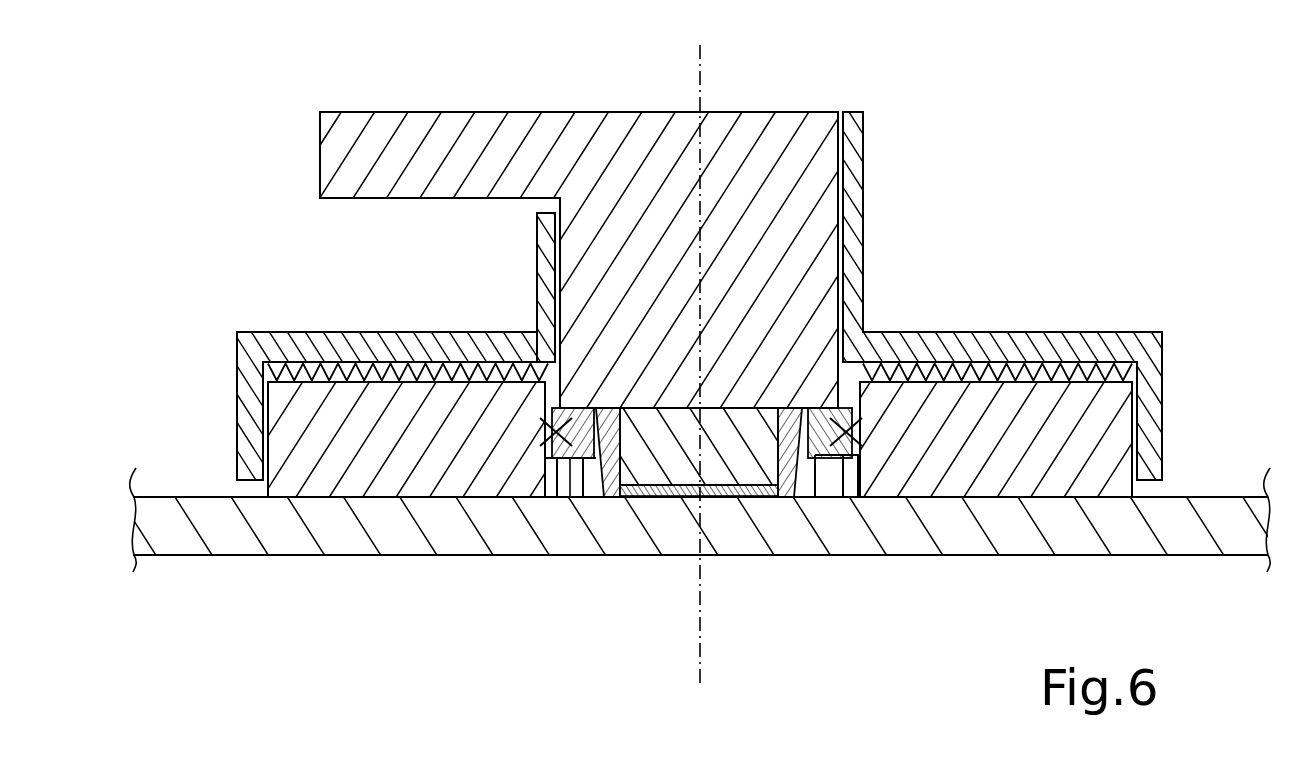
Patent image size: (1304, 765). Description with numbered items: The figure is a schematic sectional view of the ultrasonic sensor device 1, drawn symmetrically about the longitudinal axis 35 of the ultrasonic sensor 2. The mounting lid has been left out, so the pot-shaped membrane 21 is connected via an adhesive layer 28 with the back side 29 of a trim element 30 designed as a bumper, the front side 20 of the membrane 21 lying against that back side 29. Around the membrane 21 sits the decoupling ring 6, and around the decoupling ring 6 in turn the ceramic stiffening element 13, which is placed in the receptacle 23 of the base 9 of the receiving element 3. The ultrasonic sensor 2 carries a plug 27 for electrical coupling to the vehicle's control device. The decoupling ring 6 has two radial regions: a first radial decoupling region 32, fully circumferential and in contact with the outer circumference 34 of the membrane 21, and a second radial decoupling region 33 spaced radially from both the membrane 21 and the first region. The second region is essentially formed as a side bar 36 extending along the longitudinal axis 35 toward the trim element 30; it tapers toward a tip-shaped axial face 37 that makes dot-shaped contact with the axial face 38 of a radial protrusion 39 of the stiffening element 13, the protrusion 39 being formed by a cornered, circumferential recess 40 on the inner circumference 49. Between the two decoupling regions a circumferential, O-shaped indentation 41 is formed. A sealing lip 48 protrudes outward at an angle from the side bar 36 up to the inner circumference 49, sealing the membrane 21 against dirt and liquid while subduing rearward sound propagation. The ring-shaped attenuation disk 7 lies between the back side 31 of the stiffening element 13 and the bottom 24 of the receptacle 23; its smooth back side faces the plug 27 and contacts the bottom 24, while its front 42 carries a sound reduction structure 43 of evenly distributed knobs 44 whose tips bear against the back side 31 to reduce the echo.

The ultrasonic sensor device 1 is at (998, 138).
The ultrasonic sensor 2 is at (548, 128).
The receiving element 3 is at (978, 340).
The decoupling ring 6 is at (848, 352).
The attenuation disk 7 is at (430, 390).
The base 9 is at (1150, 418).
The stiffening element 13 is at (1015, 410).
The front side 20 is at (740, 460).
The membrane 21 is at (722, 490).
The receptacle 23 is at (1130, 375).
The bottom 24 is at (318, 345).
The plug 27 is at (396, 150).
The adhesive layer 28 is at (672, 486).
The back side 29 is at (163, 497).
The trim element 30 is at (234, 538).
The back side 31 is at (1095, 373).
The first radial decoupling region 32 is at (607, 455).
The second radial decoupling region 33 is at (546, 460).
The outer circumference 34 is at (785, 460).
The longitudinal axis 35 is at (702, 90).
The side bar 36 is at (858, 456).
The axial face 37 is at (566, 462).
The axial face 38 is at (555, 462).
The radial protrusion 39 is at (585, 462).
The recess 40 is at (549, 408).
The indentation 41 is at (597, 405).
The front 42 is at (349, 386).
The sound reduction structure 43 is at (375, 365).
The knobs 44 is at (457, 355).
The sealing lip 48 is at (538, 418).
The inner circumference 49 is at (546, 448).